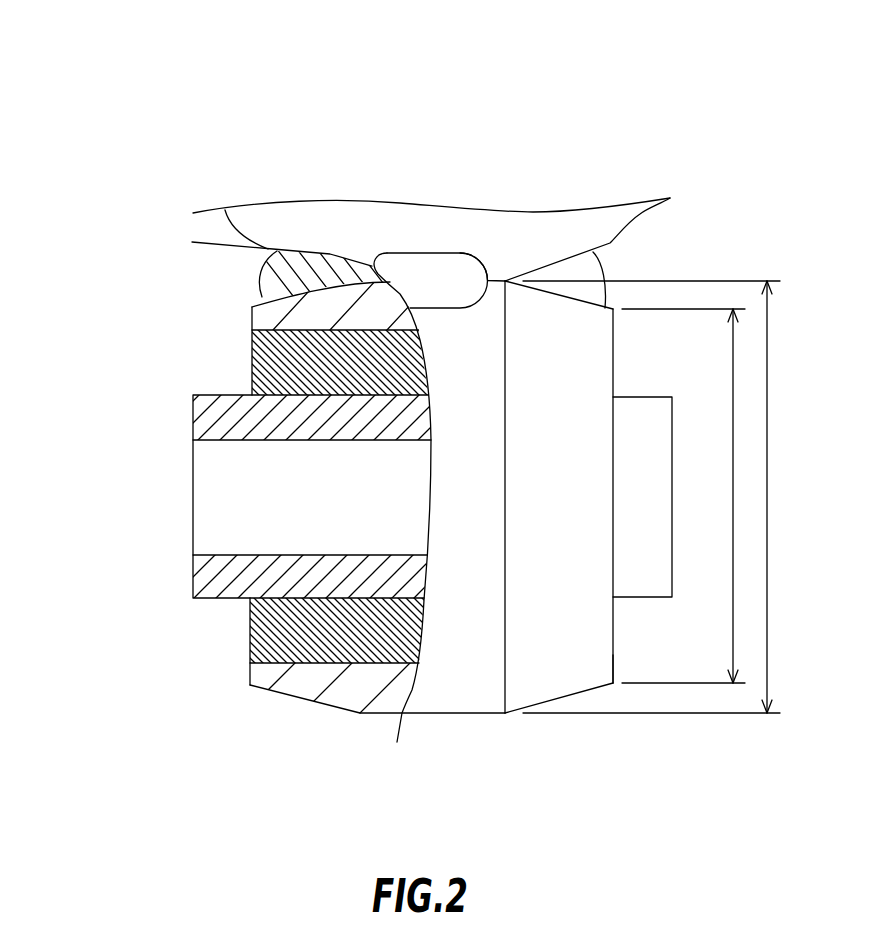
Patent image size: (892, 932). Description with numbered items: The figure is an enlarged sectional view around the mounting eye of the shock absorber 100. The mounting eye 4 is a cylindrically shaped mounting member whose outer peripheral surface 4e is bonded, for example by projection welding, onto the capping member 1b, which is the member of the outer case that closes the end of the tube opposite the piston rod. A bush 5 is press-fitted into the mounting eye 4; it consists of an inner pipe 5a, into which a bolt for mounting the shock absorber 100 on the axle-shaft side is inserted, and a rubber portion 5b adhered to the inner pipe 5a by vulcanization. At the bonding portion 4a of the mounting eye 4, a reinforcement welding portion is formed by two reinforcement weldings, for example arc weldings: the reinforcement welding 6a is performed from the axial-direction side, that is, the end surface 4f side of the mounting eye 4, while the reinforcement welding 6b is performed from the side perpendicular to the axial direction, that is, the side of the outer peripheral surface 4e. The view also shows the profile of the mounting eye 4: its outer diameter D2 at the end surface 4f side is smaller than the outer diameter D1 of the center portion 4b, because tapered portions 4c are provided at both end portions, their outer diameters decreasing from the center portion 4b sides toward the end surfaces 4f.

The shock absorber 100 is at (670, 120).
The capping member 1b is at (233, 230).
The mounting eye 4 is at (613, 638).
The bonding portion 4a is at (498, 272).
The center portion 4b is at (447, 713).
The tapered portion 4c is at (290, 697).
The outer peripheral surface 4e is at (380, 713).
The end surface 4f is at (250, 678).
The bush 5 is at (61, 573).
The inner pipe 5a is at (193, 573).
The rubber portion 5b is at (250, 627).
The reinforcement welding 6a is at (260, 290).
The reinforcement welding 6b is at (432, 253).
The outer diameter of center portion D1 is at (651, 497).
The outer diameter at end surface side D2 is at (683, 496).